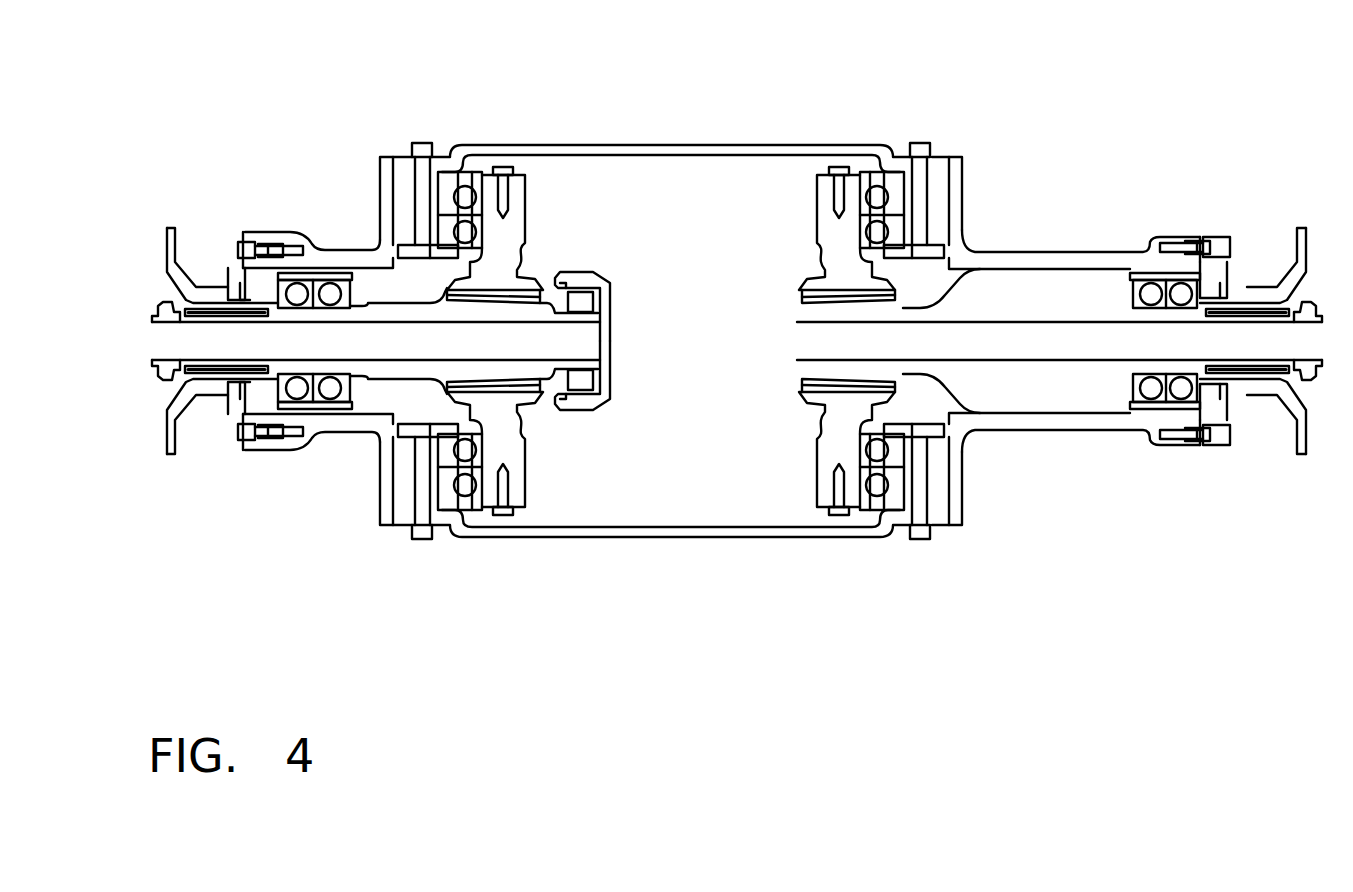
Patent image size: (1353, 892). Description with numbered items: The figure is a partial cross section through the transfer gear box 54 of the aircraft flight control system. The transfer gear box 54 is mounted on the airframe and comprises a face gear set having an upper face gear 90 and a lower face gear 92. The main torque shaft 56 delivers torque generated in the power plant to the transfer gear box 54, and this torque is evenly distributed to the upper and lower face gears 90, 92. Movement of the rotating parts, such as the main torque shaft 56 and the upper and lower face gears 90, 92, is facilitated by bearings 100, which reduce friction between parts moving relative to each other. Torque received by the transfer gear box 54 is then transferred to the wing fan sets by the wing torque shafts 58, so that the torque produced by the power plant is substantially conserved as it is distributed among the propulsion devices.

The transfer gear box 54 is at (326, 88).
The main torque shaft 56 is at (923, 308).
The wing torque shafts 58 is at (377, 443).
The upper face gear 90 is at (523, 285).
The lower face gear 92 is at (885, 412).
The bearings 100 is at (455, 232).